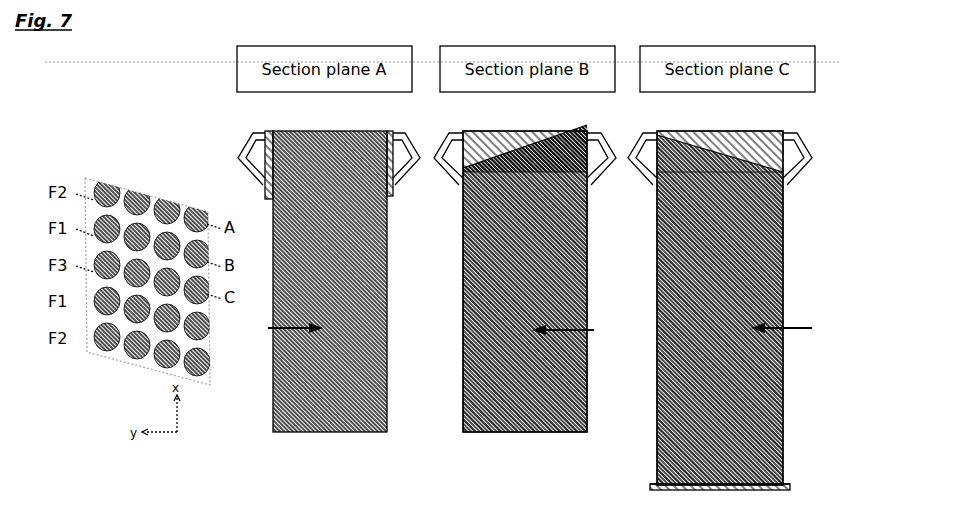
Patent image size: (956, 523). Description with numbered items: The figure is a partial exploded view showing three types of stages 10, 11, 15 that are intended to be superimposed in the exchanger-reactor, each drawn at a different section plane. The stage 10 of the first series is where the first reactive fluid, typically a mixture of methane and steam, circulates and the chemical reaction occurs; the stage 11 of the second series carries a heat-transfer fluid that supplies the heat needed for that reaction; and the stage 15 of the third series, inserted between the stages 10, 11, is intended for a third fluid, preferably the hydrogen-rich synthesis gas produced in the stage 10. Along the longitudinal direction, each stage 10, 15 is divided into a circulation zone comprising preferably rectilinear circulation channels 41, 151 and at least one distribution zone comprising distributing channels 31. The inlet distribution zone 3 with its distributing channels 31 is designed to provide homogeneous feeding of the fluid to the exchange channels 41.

The stage of the second series 11 is at (313, 121).
The stage of the first series 10 is at (489, 121).
The stage of the third series 15 is at (702, 121).
The inlet distribution zone 3 is at (587, 125).
The distributing channels 31 is at (555, 138).
The circulation channels 41 is at (581, 330).
The circulation channels 151 is at (541, 330).